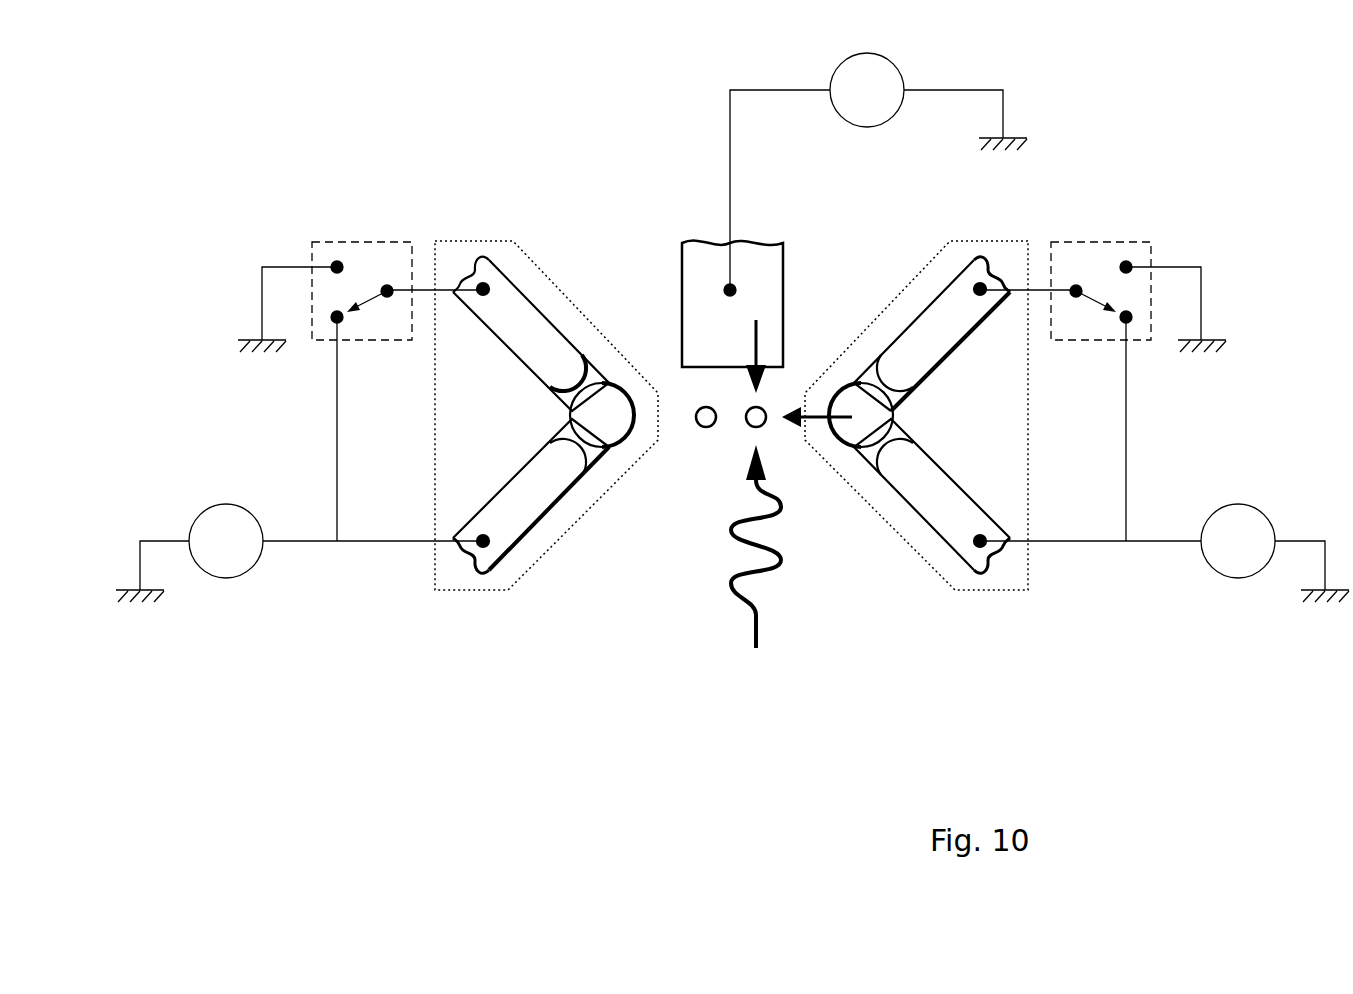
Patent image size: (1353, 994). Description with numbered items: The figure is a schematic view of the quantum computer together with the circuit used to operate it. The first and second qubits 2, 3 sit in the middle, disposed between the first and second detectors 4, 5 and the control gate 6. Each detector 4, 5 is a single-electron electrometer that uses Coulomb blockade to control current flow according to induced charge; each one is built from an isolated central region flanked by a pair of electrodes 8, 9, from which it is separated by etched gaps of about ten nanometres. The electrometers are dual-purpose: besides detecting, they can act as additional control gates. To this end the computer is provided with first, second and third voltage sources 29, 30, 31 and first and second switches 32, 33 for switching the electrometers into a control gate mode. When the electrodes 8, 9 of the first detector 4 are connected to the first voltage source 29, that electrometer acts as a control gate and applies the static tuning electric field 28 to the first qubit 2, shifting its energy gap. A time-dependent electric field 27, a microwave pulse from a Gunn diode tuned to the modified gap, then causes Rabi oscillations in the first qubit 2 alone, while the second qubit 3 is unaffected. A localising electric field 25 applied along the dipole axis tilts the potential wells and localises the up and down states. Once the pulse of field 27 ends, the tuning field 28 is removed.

The first qubit 2 is at (762, 428).
The second qubit 3 is at (701, 428).
The first detector 4 is at (919, 479).
The second detector 5 is at (497, 592).
The control gate 6 is at (758, 262).
The electrode 8 is at (917, 365).
The electrode 9 is at (942, 492).
The localising electric field 25 is at (742, 353).
The time-dependent electric field 27 is at (748, 554).
The static tuning electric field 28 is at (817, 401).
The first voltage source 29 is at (1225, 578).
The second voltage source 30 is at (233, 578).
The third voltage source 31 is at (880, 125).
The first switch 32 is at (1102, 238).
The second switch 33 is at (362, 240).